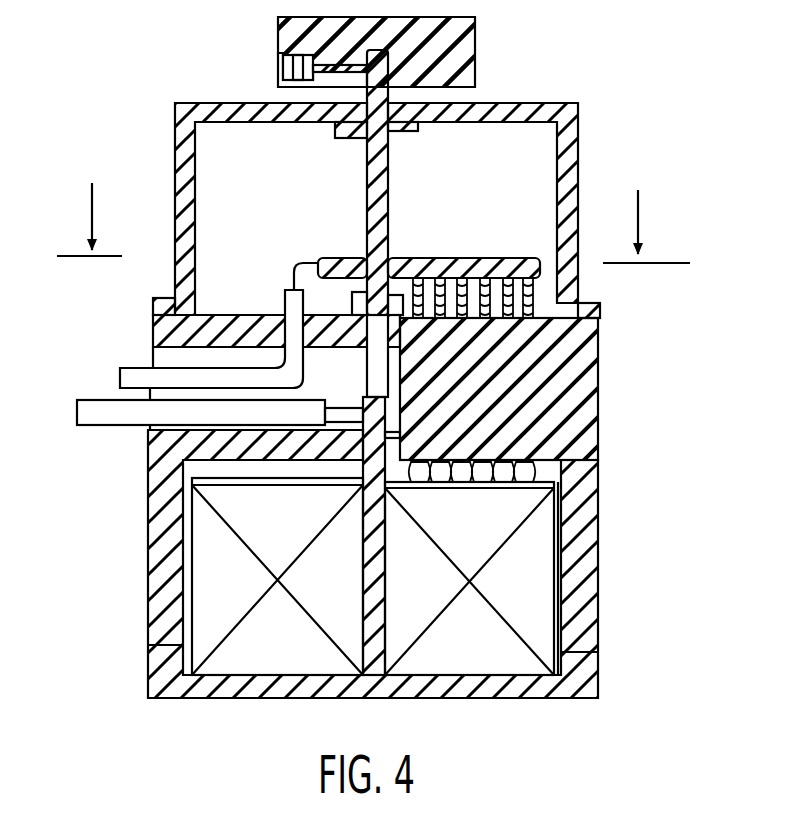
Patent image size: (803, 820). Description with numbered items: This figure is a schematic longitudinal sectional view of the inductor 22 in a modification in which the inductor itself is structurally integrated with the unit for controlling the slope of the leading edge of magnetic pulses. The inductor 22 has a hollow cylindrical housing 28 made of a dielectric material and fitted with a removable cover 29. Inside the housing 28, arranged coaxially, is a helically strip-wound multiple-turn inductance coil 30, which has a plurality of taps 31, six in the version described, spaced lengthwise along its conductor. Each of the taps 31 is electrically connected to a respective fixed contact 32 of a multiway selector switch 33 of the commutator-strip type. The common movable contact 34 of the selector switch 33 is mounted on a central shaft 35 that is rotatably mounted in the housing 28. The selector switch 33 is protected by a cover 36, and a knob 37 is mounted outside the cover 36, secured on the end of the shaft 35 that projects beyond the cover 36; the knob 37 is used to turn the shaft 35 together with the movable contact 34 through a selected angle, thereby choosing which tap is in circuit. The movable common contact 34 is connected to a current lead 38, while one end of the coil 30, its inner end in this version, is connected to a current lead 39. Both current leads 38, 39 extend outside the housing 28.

The inductor 22 is at (160, 118).
The housing 28 is at (595, 387).
The removable cover 29 is at (583, 678).
The inductance coil 30 is at (197, 593).
The taps 31 is at (440, 483).
The fixed contact 32 is at (493, 297).
The multiway selector switch 33 is at (540, 306).
The common movable contact 34 is at (403, 257).
The central shaft 35 is at (377, 188).
The cover 36 is at (570, 157).
The knob 37 is at (462, 42).
The current lead 38 is at (137, 368).
The current lead 39 is at (110, 417).